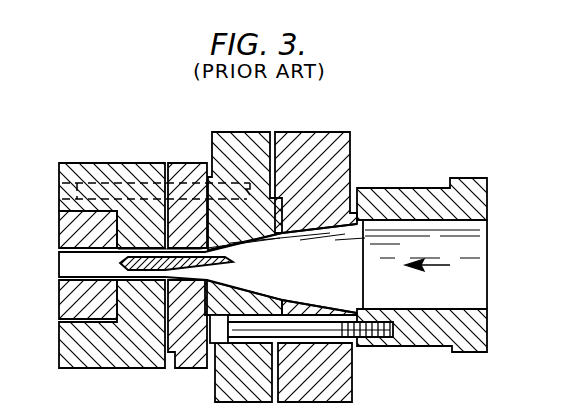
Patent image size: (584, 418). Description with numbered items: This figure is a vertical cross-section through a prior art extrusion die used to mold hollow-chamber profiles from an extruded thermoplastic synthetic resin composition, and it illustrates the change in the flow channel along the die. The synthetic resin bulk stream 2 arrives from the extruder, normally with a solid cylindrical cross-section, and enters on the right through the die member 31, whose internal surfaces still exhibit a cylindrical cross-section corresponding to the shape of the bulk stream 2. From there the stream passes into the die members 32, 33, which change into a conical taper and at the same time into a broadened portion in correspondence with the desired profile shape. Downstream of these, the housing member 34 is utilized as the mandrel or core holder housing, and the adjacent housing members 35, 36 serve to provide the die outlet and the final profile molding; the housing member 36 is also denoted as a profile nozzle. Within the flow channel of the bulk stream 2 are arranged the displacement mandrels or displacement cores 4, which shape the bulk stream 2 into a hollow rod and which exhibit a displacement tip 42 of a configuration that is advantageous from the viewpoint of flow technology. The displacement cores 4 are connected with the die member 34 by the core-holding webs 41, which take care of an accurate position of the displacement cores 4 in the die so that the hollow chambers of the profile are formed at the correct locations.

The bulk stream 2 is at (447, 265).
The displacement mandrel 4 is at (59, 267).
The die member 31 is at (400, 195).
The die member 32 is at (316, 132).
The die member 33 is at (247, 132).
The housing member 34 is at (190, 163).
The housing member 35 is at (130, 162).
The housing member 36 is at (59, 231).
The core-holding web 41 is at (0, 103).
The displacement tip 42 is at (268, 240).